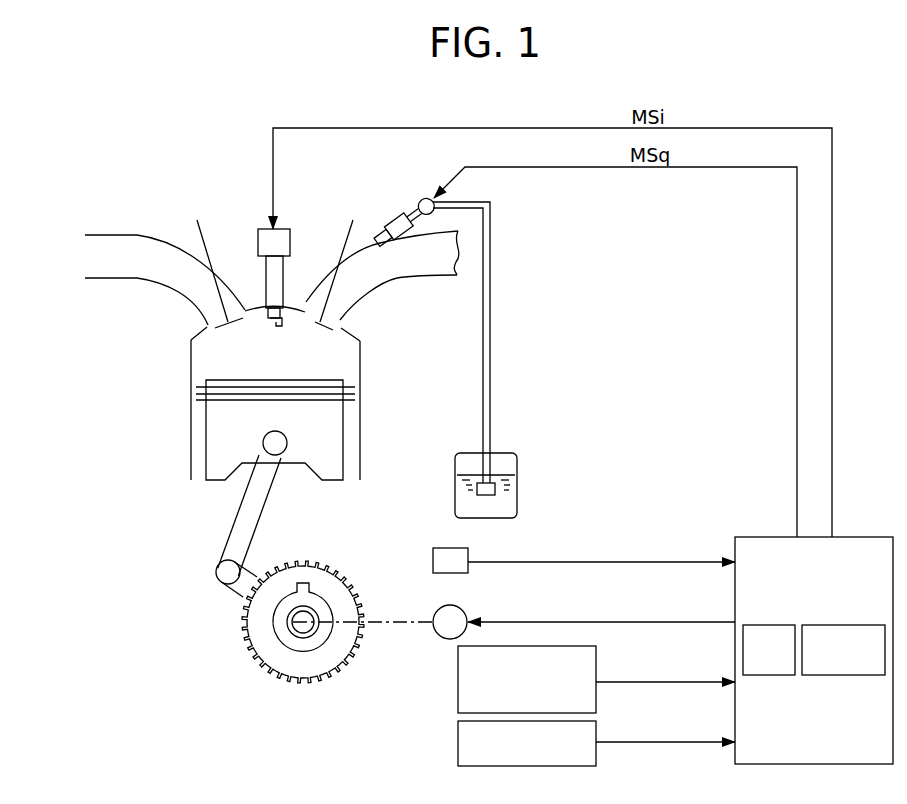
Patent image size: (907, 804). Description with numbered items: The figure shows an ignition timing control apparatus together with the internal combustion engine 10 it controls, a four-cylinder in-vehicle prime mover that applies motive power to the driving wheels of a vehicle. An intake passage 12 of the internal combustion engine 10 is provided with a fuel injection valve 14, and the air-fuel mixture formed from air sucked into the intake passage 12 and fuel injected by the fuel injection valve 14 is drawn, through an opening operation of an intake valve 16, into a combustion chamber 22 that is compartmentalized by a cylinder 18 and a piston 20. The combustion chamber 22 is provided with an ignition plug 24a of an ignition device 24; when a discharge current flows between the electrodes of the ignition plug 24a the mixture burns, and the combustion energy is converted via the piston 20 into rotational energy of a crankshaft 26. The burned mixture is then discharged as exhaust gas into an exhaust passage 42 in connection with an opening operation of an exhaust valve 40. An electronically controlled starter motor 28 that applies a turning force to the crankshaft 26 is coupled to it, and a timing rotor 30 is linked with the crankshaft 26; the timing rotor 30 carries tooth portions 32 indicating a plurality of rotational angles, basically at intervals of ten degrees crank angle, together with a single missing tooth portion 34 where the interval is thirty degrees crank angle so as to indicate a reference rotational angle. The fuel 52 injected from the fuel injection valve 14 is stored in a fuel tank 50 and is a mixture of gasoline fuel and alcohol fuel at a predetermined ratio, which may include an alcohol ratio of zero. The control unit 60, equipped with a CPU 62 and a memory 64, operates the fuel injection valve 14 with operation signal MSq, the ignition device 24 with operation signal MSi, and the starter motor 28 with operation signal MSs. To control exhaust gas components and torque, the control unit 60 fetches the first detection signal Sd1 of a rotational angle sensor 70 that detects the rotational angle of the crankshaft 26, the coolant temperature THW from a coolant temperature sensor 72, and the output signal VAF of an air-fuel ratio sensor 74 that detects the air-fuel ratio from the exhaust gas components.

The internal combustion engine 10 is at (179, 172).
The intake passage 12 is at (392, 273).
The fuel injection valve 14 is at (397, 218).
The intake valve 16 is at (347, 238).
The cylinder 18 is at (360, 362).
The piston 20 is at (343, 430).
The combustion chamber 22 is at (217, 355).
The ignition device 24 is at (283, 278).
The ignition plug 24a is at (275, 326).
The crankshaft 26 is at (290, 624).
The starter motor 28 is at (457, 602).
The timing rotor 30 is at (324, 593).
The tooth portions 32 is at (352, 574).
The missing tooth portion 34 is at (361, 593).
The exhaust valve 40 is at (203, 232).
The exhaust passage 42 is at (155, 277).
The fuel tank 50 is at (501, 360).
The fuel 52 is at (510, 497).
The control unit 60 is at (814, 625).
The CPU 62 is at (780, 624).
The memory 64 is at (857, 624).
The rotational angle sensor 70 is at (457, 547).
The coolant temperature sensor 72 is at (458, 682).
The air-fuel ratio sensor 74 is at (458, 743).